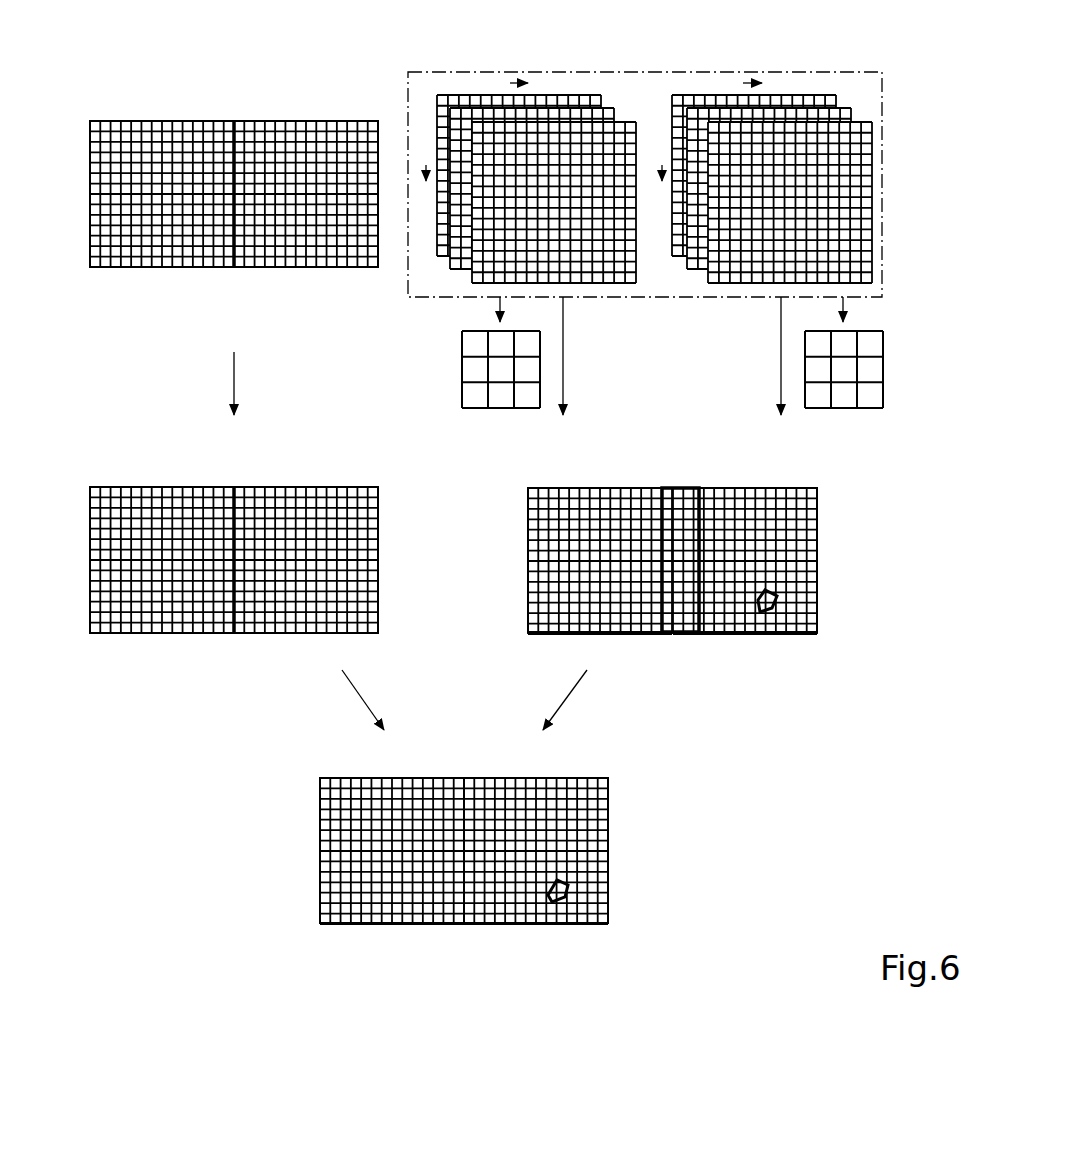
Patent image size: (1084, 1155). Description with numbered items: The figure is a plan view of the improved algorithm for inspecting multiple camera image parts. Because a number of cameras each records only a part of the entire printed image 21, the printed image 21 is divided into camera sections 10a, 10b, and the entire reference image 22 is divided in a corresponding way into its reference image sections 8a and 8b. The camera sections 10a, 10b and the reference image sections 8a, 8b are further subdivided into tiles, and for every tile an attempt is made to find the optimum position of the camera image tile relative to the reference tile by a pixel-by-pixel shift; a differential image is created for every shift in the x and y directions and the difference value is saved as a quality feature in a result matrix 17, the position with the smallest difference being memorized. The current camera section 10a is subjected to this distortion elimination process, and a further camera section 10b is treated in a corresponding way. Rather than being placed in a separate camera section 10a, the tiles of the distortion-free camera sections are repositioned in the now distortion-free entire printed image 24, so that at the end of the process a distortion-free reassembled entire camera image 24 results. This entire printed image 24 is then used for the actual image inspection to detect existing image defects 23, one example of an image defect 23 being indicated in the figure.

The reference image section 8a is at (142, 120).
The reference image section 8b is at (295, 120).
The camera section 10a is at (472, 94).
The camera section 10b is at (707, 94).
The result matrix 17 is at (462, 371).
The printed image 21 is at (882, 72).
The reference image 22 is at (90, 127).
The image defect 23 is at (777, 602).
The entire printed image 24 is at (815, 488).